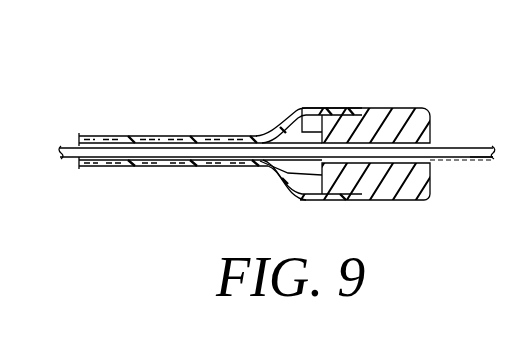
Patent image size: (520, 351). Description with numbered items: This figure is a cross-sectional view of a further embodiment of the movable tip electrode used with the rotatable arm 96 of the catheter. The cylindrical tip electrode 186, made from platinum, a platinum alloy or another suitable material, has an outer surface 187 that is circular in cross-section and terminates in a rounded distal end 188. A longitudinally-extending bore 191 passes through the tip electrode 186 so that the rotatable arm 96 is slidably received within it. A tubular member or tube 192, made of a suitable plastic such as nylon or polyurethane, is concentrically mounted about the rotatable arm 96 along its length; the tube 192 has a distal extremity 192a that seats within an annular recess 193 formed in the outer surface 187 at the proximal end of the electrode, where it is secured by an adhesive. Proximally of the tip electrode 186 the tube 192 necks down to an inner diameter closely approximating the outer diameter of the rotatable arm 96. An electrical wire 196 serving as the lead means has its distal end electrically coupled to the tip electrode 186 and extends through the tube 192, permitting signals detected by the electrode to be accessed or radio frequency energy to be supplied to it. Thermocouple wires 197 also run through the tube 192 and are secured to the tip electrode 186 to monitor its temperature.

The cylindrical tip electrode 186 is at (407, 148).
The outer surface 187 is at (377, 108).
The rounded distal end 188 is at (433, 125).
The longitudinally-extending bore 191 is at (440, 149).
The tube 192 is at (120, 168).
The distal extremity 192a is at (324, 199).
The annular recess 193 is at (350, 200).
The electrical wire 196 is at (289, 170).
The thermocouple wires 197 is at (302, 118).
The rotatable arm 96 is at (487, 163).